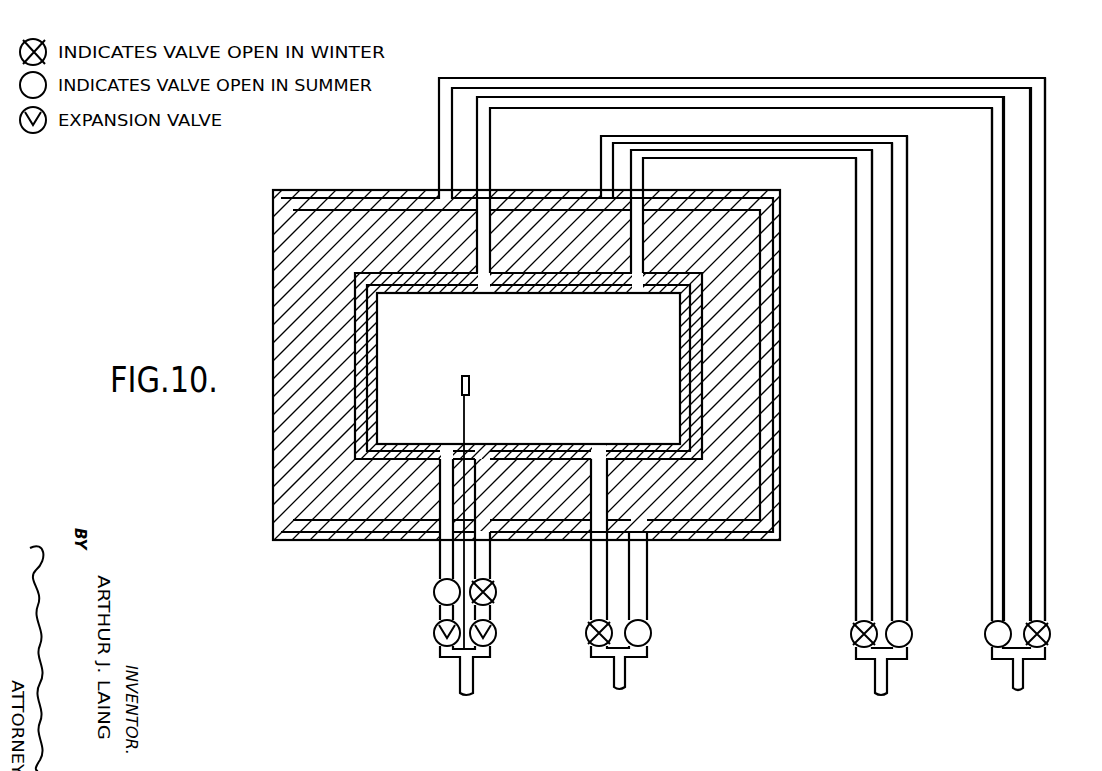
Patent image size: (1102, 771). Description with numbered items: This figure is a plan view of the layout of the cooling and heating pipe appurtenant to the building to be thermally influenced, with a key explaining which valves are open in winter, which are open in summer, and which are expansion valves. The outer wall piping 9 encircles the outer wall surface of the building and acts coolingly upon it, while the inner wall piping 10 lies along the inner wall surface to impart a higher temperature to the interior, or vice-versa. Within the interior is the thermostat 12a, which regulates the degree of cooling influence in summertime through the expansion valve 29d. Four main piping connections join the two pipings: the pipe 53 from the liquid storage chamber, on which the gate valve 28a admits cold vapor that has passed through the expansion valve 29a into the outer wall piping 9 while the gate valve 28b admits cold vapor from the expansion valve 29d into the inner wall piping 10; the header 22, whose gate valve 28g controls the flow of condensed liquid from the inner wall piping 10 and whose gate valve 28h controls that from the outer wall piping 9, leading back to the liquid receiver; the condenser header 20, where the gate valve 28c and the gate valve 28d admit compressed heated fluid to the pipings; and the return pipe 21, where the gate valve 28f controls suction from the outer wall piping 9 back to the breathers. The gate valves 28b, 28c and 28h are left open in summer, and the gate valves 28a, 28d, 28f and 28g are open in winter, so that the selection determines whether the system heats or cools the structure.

The outer wall piping 9 is at (273, 255).
The inner wall piping 10 is at (368, 317).
The thermostat 12a is at (469, 385).
The gate valve 28a is at (497, 594).
The gate valve 28b is at (434, 593).
The expansion valve 29a is at (497, 635).
The expansion valve 29d is at (434, 634).
The gate valve 28g is at (585, 640).
The gate valve 28h is at (652, 636).
The gate valve 28c is at (912, 638).
The gate valve 28d is at (851, 634).
The gate valve 28f is at (1050, 638).
The pipe 53 is at (465, 690).
The header 22 is at (621, 688).
The condenser header 20 is at (878, 690).
The return pipe 21 is at (1017, 688).